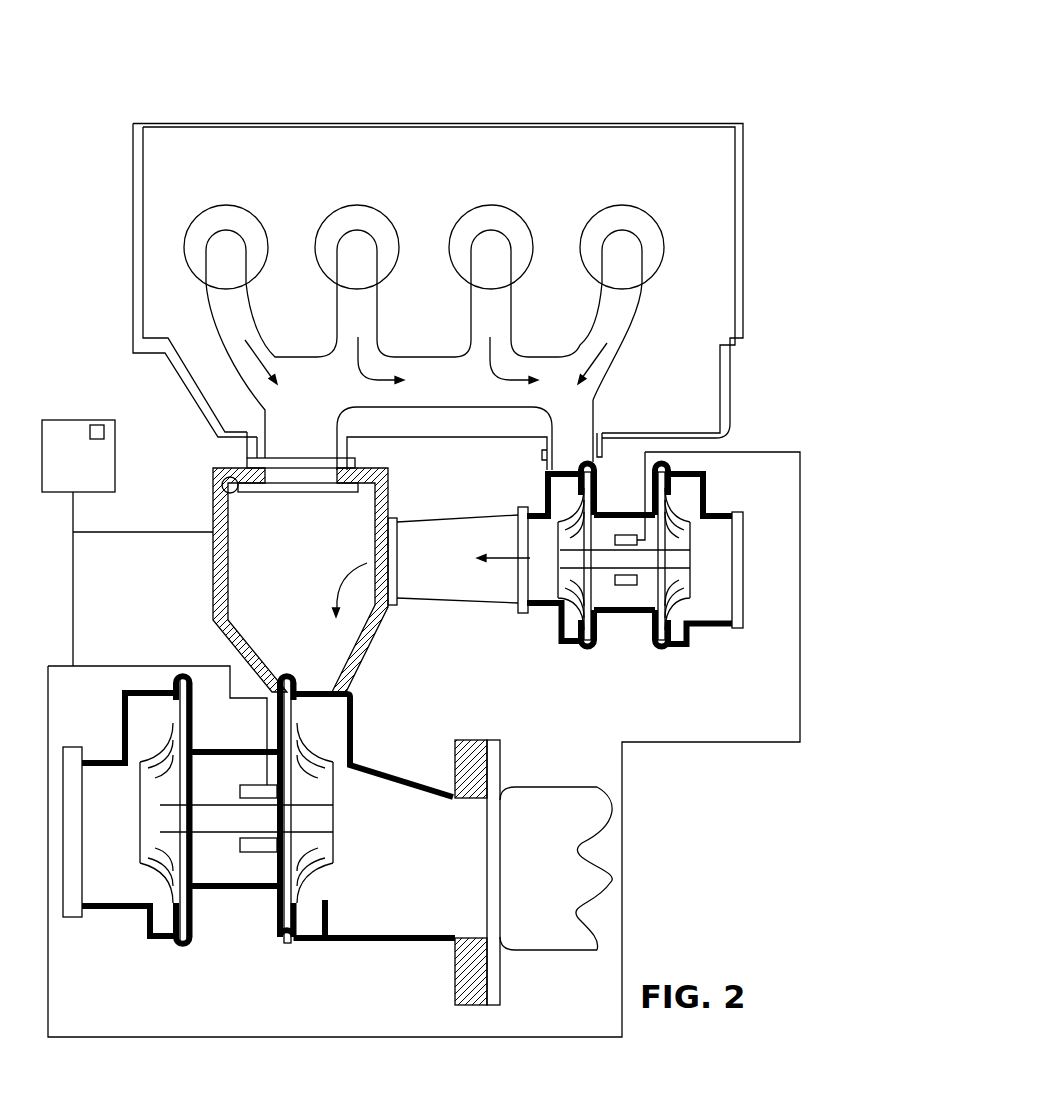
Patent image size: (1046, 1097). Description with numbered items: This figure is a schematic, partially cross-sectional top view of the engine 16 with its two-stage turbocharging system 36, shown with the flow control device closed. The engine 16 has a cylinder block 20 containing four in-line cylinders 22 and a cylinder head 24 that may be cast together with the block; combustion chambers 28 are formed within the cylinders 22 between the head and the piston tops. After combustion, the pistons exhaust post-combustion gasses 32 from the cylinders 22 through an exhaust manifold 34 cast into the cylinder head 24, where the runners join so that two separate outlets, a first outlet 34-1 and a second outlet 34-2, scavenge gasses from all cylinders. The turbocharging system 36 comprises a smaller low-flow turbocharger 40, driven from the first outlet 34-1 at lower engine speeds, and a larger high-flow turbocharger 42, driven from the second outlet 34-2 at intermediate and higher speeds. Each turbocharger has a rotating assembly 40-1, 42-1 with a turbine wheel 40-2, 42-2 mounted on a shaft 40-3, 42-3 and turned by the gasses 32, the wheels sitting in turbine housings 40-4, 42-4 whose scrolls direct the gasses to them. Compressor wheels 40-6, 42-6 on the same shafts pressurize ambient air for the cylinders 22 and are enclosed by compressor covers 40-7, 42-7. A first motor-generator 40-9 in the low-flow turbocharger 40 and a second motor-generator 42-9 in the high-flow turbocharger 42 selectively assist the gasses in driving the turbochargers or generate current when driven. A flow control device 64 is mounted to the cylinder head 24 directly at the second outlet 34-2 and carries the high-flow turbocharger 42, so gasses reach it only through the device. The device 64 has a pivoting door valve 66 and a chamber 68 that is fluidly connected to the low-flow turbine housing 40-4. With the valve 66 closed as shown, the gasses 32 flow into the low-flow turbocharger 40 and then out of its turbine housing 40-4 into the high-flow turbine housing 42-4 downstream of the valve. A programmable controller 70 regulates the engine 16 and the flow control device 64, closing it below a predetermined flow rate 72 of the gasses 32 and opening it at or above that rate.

The engine 16 is at (684, 87).
The cylinder block 20 is at (745, 298).
The cylinders 22 is at (248, 198).
The cylinder head 24 is at (752, 209).
The combustion chambers 28 is at (202, 226).
The post-combustion gasses 32 is at (362, 360).
The exhaust manifold 34 is at (650, 305).
The first outlet 34-1 is at (572, 458).
The second outlet 34-2 is at (297, 452).
The turbocharging system 36 is at (661, 781).
The low-flow turbocharger 40 is at (600, 466).
The rotating assembly 40-1 is at (626, 601).
The turbine wheel 40-2 is at (563, 648).
The shaft 40-3 is at (650, 557).
The turbine housing 40-4 is at (606, 488).
The compressor wheel 40-6 is at (687, 552).
The compressor cover 40-7 is at (683, 630).
The first motor-generator 40-9 is at (638, 586).
The high-flow turbocharger 42 is at (515, 744).
The rotating assembly 42-1 is at (229, 843).
The turbine wheel 42-2 is at (328, 823).
The shaft 42-3 is at (205, 812).
The turbine housing 42-4 is at (315, 940).
The compressor wheel 42-6 is at (147, 863).
The compressor cover 42-7 is at (140, 723).
The second motor-generator 42-9 is at (262, 850).
The flow control device 64 is at (203, 515).
The valve 66 is at (272, 493).
The chamber 68 is at (297, 615).
The controller 70 is at (83, 478).
The predetermined flow rate 72 is at (97, 426).